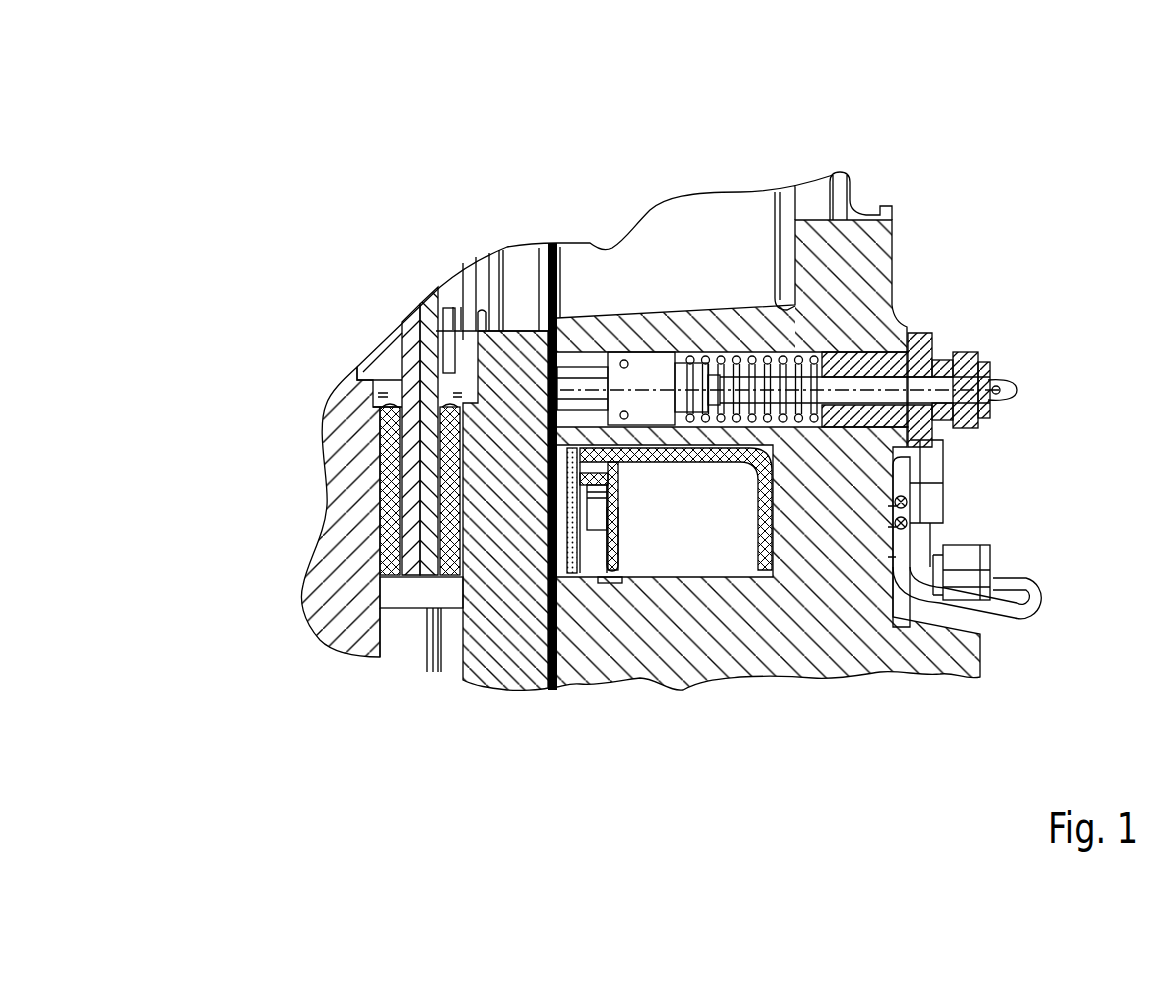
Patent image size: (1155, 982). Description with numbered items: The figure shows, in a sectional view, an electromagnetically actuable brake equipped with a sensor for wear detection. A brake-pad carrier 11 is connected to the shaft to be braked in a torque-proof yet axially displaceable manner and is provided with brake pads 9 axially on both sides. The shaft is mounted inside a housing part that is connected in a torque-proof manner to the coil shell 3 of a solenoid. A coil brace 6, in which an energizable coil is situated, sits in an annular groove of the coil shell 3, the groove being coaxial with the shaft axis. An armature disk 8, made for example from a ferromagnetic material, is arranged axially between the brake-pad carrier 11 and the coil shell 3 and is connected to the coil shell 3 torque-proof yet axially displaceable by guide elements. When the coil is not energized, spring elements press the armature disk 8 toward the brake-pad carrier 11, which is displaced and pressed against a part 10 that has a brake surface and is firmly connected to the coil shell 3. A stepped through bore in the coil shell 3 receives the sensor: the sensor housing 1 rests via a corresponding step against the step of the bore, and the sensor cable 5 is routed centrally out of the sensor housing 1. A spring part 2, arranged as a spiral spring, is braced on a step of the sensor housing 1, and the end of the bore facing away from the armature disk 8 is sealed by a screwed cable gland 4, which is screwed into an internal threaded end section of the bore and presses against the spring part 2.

The sensor housing 1 is at (659, 377).
The spring part 2 is at (750, 357).
The coil shell 3 is at (862, 278).
The screwed cable gland 4 is at (920, 355).
The sensor cable 5 is at (952, 392).
The coil brace 6 is at (766, 530).
The armature disk 8 is at (508, 610).
The brake pads 9 is at (452, 503).
The part 10 is at (337, 560).
The brake-pad carrier 11 is at (415, 337).